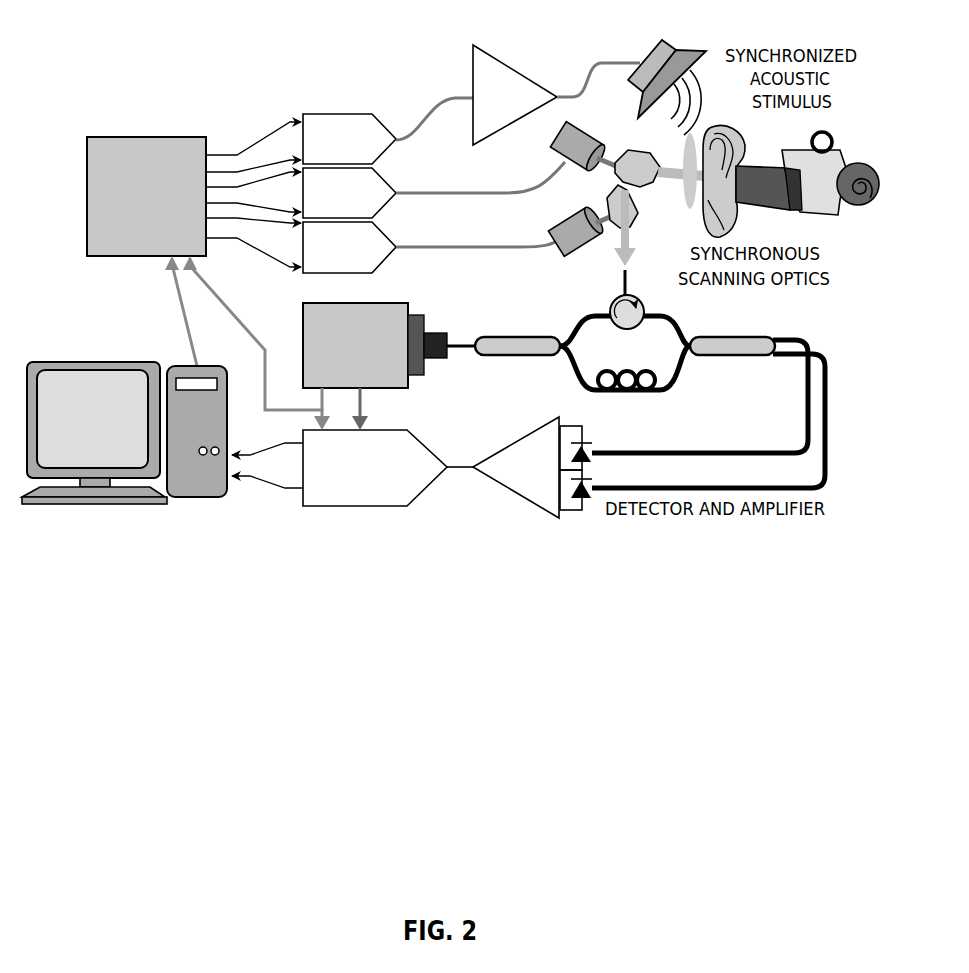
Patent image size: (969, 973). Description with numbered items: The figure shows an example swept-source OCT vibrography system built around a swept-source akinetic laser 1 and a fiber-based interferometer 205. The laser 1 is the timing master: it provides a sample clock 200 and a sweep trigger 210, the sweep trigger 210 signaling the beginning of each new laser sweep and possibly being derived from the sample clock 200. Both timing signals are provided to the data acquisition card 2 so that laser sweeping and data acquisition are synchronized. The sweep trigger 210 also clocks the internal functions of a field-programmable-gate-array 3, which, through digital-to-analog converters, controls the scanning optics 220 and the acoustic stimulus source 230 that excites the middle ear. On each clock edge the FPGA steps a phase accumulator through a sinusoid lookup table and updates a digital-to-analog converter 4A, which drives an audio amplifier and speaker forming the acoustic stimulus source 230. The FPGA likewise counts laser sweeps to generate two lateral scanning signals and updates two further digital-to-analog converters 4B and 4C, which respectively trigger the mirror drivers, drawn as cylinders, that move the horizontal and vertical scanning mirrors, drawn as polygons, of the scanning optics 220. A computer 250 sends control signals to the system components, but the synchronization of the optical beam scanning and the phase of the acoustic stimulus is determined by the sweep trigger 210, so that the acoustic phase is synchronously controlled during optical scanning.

The swept-source akinetic laser 1 is at (375, 345).
The data acquisition card 2 is at (375, 468).
The field-programmable-gate-array 3 is at (146, 196).
The digital-to-analog converter 4A is at (349, 139).
The digital-to-analog converter 4B is at (349, 193).
The digital-to-analog converter 4C is at (349, 247).
The sample clock 200 is at (366, 410).
The fiber-based interferometer 205 is at (750, 440).
The sweep trigger 210 is at (236, 322).
The scanning optics 220 is at (598, 200).
The acoustic stimulus source 230 is at (657, 52).
The computer 250 is at (66, 362).